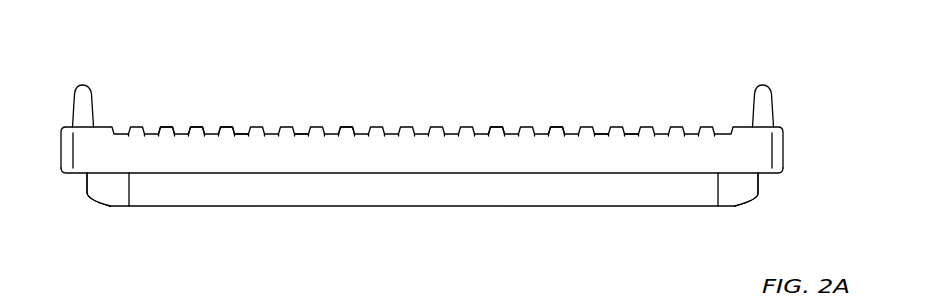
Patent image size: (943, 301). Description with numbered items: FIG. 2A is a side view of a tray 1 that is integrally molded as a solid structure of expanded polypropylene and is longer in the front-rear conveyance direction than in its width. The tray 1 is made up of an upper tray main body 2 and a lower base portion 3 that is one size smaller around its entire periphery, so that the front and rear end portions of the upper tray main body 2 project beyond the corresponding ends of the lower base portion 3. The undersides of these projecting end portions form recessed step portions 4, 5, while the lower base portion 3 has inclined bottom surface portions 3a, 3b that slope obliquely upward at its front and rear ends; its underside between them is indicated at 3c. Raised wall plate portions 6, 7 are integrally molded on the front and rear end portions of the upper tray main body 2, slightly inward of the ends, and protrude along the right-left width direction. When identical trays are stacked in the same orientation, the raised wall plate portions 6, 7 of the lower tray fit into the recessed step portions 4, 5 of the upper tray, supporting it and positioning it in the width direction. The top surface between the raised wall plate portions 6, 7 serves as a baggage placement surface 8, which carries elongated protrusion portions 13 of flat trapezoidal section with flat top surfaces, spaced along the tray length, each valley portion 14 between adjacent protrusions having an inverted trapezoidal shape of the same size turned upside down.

The tray 1 is at (669, 126).
The upper tray main body 2 is at (540, 162).
The lower base portion 3 is at (422, 224).
The inclined bottom surface portion 3a is at (107, 206).
The inclined bottom surface portion 3b is at (737, 206).
The bottom surface of base plate 3c is at (447, 208).
The recessed step portion 4 is at (78, 181).
The recessed step portion 5 is at (772, 183).
The raised wall plate portion 6 is at (83, 88).
The raised wall plate portion 7 is at (765, 92).
The baggage placement surface 8 is at (347, 126).
The elongated protrusion portion 13 is at (225, 128).
The valley portion 14 is at (303, 131).